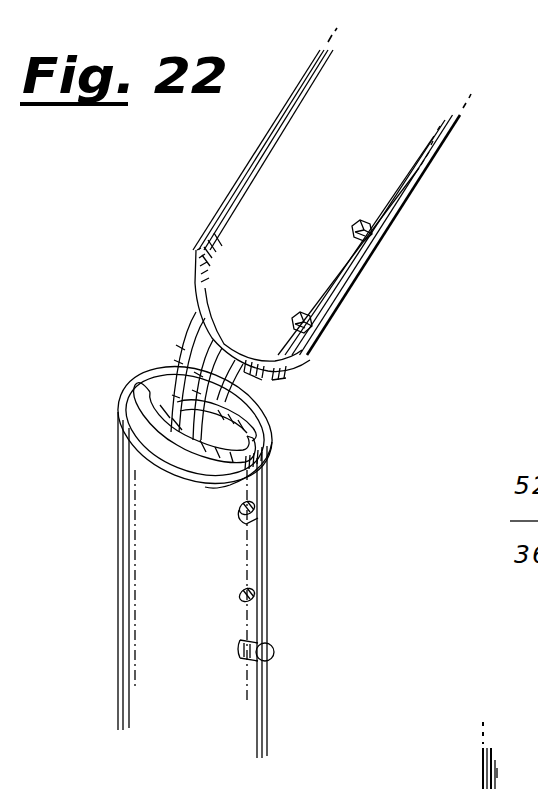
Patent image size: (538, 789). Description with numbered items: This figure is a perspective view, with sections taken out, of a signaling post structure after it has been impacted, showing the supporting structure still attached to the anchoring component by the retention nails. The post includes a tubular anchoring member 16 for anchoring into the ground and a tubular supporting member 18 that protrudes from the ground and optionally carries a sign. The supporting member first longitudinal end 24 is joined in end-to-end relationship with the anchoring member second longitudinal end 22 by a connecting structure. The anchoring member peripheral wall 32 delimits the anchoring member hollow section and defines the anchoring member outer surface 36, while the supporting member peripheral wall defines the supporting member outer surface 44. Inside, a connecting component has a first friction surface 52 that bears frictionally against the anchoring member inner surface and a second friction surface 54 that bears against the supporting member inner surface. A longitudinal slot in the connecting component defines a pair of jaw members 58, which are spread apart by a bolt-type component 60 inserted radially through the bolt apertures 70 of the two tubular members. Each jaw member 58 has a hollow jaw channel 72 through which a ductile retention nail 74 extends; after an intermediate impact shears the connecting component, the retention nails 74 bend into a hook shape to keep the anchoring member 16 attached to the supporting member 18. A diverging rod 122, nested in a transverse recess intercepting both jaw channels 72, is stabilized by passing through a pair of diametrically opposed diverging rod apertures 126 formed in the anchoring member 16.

The tubular anchoring member 16 is at (158, 606).
The tubular supporting member 18 is at (470, 168).
The anchoring member second longitudinal end 22 is at (100, 428).
The supporting member first longitudinal end 24 is at (192, 238).
The anchoring member peripheral wall 32 is at (126, 408).
The anchoring member outer surface 36 is at (146, 500).
The supporting member outer surface 44 is at (262, 198).
The first friction surface 52 is at (158, 438).
The second friction surface 54 is at (195, 291).
The jaw members 58 is at (252, 387).
The bolt-type component 60 is at (372, 233).
The bolt aperture 70 is at (258, 516).
The jaw channel 72 is at (268, 402).
The retention nail 74 is at (218, 364).
The diverging rod 122 is at (275, 653).
The diverging rod apertures 126 is at (262, 622).